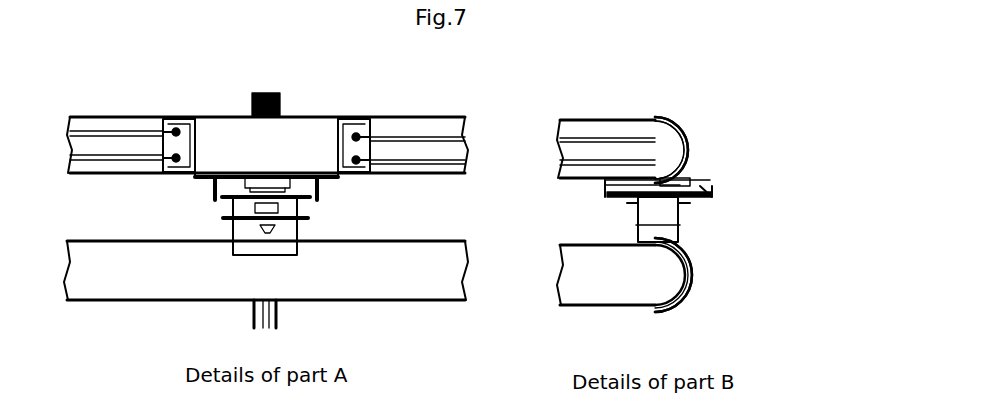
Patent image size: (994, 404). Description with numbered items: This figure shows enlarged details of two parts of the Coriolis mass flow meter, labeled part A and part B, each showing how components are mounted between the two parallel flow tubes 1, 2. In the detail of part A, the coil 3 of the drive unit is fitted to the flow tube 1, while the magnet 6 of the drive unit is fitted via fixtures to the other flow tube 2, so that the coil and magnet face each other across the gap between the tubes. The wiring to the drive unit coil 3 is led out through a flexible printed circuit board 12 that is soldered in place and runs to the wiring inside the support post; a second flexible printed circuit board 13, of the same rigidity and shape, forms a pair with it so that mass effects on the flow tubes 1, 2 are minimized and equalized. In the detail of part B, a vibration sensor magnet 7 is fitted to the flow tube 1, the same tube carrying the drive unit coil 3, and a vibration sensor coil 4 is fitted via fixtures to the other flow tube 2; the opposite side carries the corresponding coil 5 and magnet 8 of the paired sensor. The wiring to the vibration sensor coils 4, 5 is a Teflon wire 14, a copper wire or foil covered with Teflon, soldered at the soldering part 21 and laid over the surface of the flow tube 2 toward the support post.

The flow tube 1 is at (577, 278).
The flow tube 2 is at (428, 148).
The coil 3 is at (245, 205).
The vibration sensor coil 4 is at (683, 170).
The vibration sensor coil 5 is at (749, 150).
The magnet 6 is at (315, 200).
The vibration sensor magnet 7 is at (664, 212).
The opposite stem clip side 8 is at (744, 275).
The flexible printed circuit board 12 is at (253, 325).
The flexible printed circuit board 13 is at (278, 92).
The Teflon wire 14 is at (410, 133).
The soldering part 21 is at (715, 190).